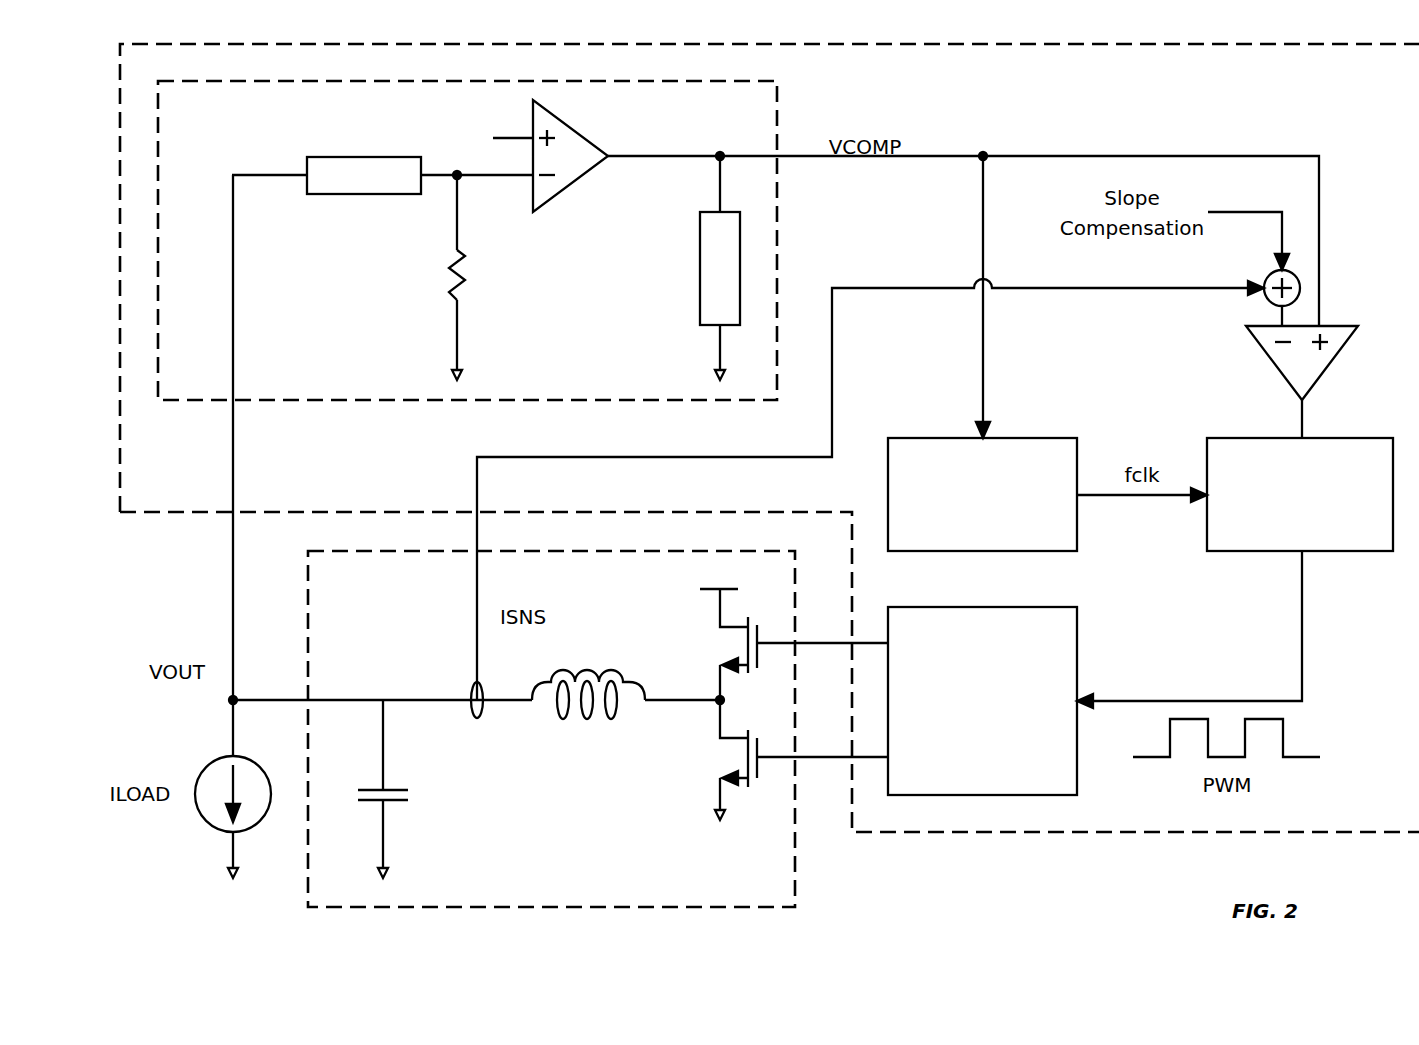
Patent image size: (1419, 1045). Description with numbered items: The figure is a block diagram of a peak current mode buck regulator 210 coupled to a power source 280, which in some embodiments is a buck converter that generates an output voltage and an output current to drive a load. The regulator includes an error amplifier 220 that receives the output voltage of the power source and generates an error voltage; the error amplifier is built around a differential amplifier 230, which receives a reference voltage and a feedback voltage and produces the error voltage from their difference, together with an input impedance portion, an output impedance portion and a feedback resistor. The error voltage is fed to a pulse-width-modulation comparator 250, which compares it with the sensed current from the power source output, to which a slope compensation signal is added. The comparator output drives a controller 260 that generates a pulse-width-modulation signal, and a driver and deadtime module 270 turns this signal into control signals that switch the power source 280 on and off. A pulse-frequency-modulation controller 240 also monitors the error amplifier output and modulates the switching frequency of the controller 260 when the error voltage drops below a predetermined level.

The peak current mode buck regulator 210 is at (1375, 85).
The error amplifier 220 is at (570, 292).
The differential amplifier 230 is at (576, 186).
The pulse-frequency-modulation (PFM) controller 240 is at (982, 494).
The pulse-width-modulation (PWM) comparator 250 is at (1273, 362).
The controller 260 is at (1300, 494).
The driver & deadtime module 270 is at (982, 701).
The power source 280 is at (795, 835).